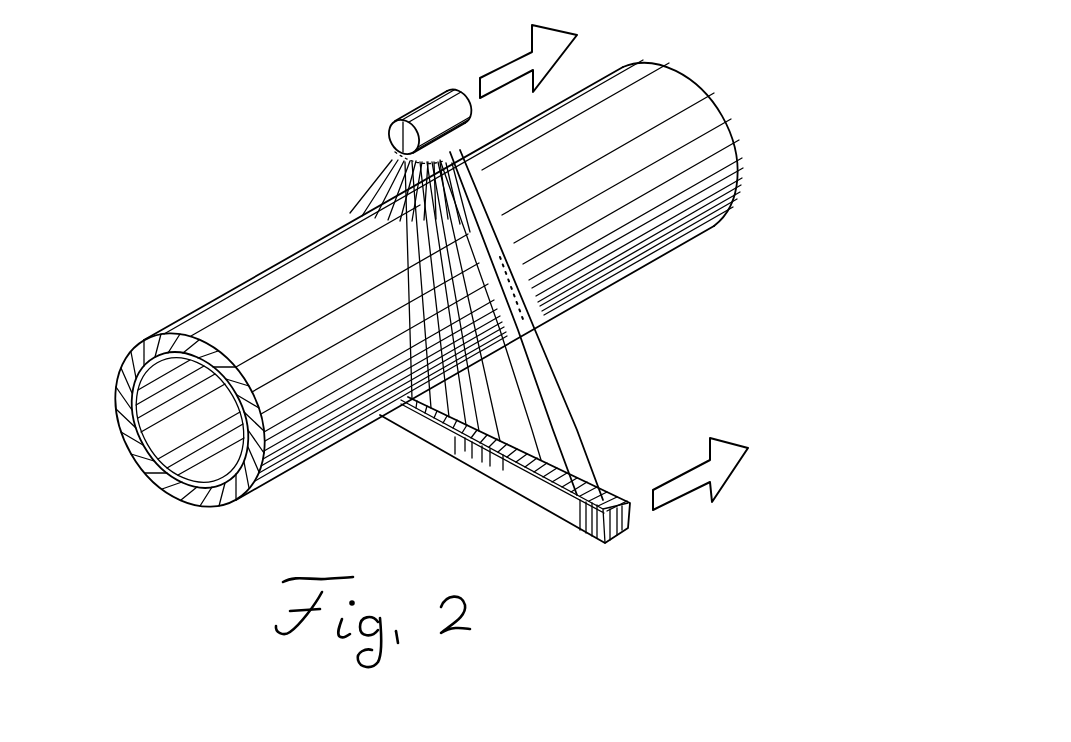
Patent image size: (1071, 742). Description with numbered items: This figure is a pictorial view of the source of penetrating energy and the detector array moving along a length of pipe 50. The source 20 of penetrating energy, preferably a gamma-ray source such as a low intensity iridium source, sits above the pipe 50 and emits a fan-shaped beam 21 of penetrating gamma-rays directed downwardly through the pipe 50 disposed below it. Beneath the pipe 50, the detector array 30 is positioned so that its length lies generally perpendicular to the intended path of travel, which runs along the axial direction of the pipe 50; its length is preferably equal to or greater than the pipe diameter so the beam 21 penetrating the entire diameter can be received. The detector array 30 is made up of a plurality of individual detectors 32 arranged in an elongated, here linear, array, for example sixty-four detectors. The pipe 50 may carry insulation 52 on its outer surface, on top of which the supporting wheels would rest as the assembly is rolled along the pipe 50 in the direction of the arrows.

The source of penetrating energy 20 is at (432, 96).
The fan-shaped beam 21 is at (573, 398).
The detector array 30 is at (618, 543).
The individual detectors 32 is at (598, 484).
The pipe 50 is at (178, 452).
The insulation 52 is at (240, 500).